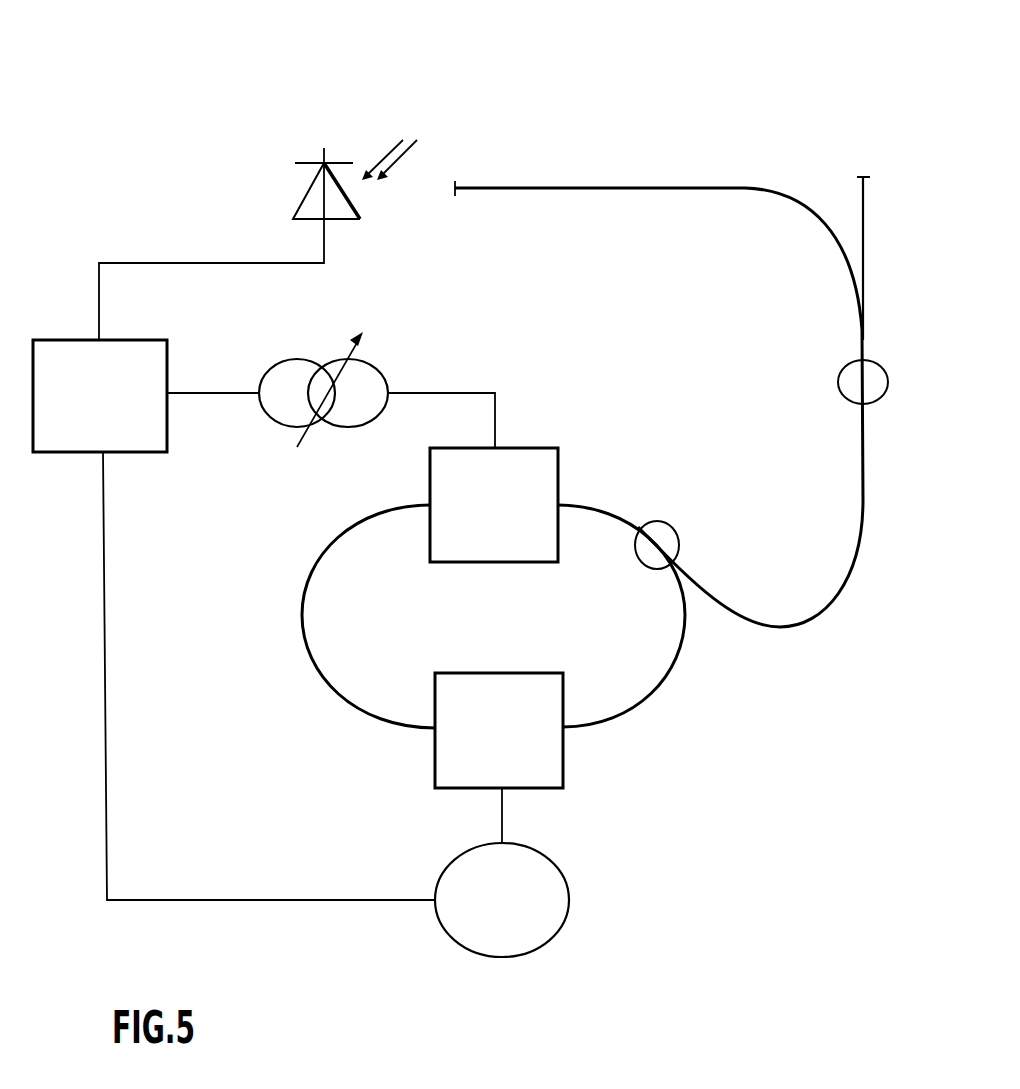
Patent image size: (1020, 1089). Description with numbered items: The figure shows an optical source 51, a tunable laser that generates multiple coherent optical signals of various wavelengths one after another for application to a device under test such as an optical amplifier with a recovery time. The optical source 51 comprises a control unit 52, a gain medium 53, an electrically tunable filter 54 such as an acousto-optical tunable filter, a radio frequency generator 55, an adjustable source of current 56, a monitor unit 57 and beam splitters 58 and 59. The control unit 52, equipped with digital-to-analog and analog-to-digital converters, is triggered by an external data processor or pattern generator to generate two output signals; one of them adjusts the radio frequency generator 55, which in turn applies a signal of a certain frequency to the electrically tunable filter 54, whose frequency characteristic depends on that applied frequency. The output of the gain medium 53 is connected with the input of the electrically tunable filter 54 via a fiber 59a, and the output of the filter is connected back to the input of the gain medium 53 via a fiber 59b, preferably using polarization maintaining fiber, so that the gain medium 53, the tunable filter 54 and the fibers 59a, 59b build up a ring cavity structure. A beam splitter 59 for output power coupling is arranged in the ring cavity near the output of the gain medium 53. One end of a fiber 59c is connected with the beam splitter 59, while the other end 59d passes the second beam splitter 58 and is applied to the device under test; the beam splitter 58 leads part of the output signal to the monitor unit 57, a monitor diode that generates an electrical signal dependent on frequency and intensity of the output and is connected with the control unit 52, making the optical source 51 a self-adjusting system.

The optical source 51 is at (632, 98).
The control unit 52 is at (143, 452).
The gain medium 53 is at (532, 447).
The electrically tunable filter 54 is at (563, 770).
The radio frequency generator 55 is at (570, 900).
The adjustable source of current 56 is at (282, 358).
The monitor unit 57 is at (355, 220).
The second beam splitter 58 is at (840, 372).
The beam splitter 59 is at (660, 521).
The fiber 59a is at (658, 688).
The fiber 59b is at (303, 635).
The fiber 59c is at (607, 190).
The fiber end 59d is at (860, 197).